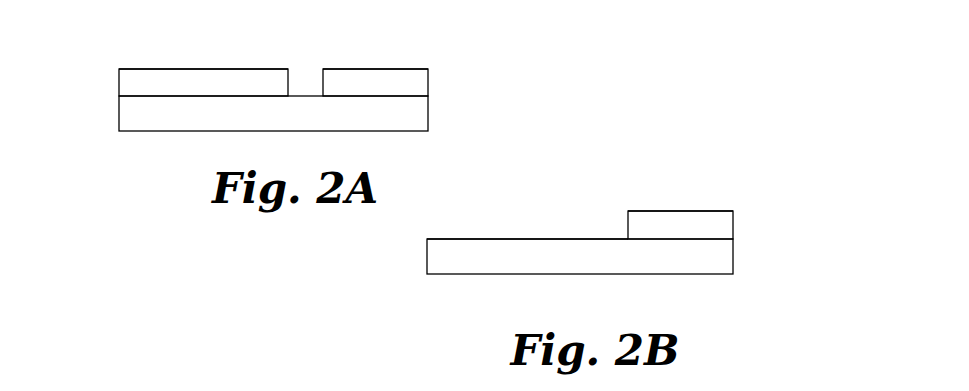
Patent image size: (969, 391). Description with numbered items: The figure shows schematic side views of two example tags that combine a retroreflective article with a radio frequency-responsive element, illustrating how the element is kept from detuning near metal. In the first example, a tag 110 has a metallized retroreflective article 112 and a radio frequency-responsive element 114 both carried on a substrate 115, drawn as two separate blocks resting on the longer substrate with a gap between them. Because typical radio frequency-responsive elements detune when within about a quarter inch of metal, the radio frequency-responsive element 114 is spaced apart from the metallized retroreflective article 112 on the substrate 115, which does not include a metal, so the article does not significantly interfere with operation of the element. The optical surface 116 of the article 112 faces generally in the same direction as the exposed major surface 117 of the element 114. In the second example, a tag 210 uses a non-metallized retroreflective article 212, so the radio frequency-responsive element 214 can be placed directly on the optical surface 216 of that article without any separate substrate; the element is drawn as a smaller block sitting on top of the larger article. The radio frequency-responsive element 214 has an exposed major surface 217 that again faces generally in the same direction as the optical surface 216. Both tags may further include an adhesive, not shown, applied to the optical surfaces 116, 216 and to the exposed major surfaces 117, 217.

In FIG. 2A, the tag 110 is at (455, 40).
In FIG. 2A, the metallized retroreflective article 112 is at (125, 81).
In FIG. 2A, the radio frequency-responsive element 114 is at (422, 82).
In FIG. 2A, the substrate 115 is at (140, 120).
In FIG. 2A, the optical surface 116 is at (165, 67).
In FIG. 2A, the exposed major surface 117 is at (405, 67).
In FIG. 2B, the tag 210 is at (762, 185).
In FIG. 2B, the non-metallized retroreflective article 212 is at (583, 264).
In FIG. 2B, the radio frequency-responsive element 214 is at (728, 226).
In FIG. 2B, the optical surface 216 is at (472, 238).
In FIG. 2B, the exposed major surface 217 is at (713, 210).